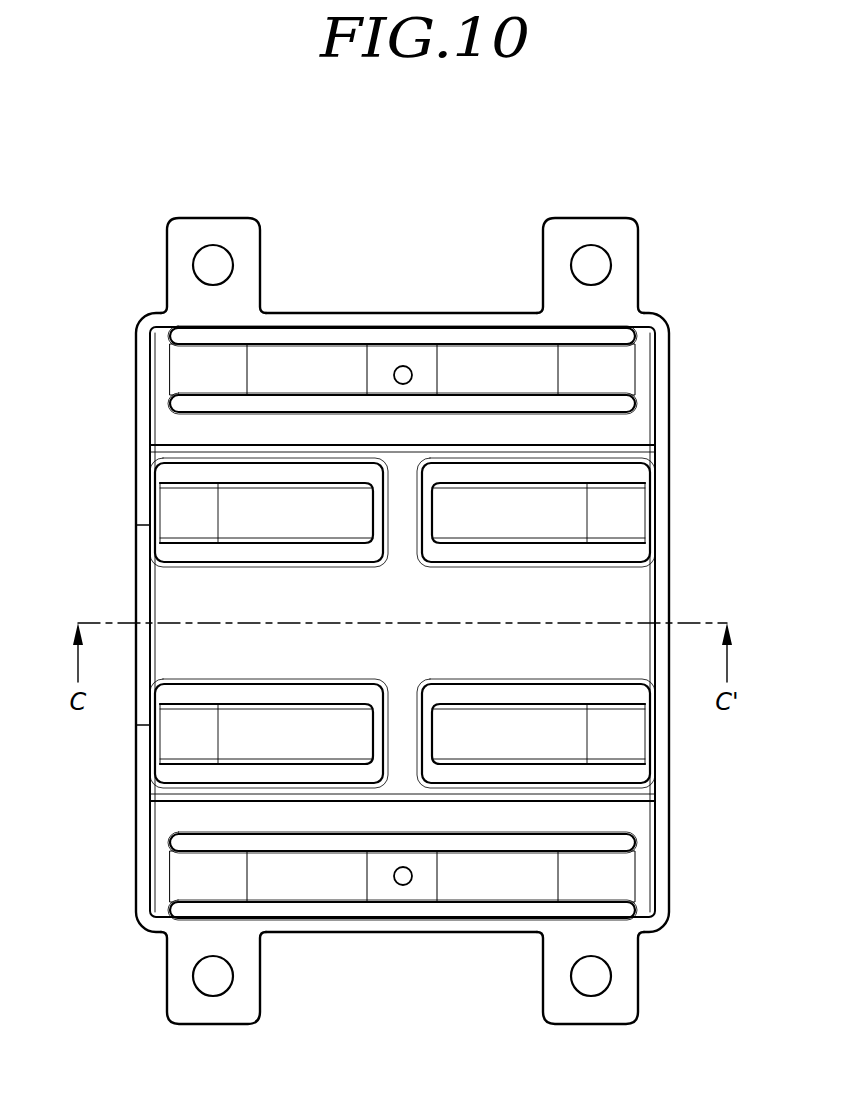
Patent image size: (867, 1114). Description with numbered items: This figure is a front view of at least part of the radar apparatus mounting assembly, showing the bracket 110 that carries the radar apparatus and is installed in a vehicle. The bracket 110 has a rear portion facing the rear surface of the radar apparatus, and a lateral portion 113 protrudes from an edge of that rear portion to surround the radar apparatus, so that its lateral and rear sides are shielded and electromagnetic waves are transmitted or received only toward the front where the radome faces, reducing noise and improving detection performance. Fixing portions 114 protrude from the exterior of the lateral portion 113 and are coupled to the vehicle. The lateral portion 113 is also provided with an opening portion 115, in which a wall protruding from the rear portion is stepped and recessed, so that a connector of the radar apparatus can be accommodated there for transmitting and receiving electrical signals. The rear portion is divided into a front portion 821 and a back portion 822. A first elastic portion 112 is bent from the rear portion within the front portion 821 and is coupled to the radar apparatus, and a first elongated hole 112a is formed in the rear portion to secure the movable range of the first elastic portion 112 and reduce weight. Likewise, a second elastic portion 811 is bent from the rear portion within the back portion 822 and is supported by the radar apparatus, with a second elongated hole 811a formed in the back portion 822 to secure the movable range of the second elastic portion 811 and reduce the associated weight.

The bracket 110 is at (118, 178).
The first elastic portion 112 is at (313, 370).
The first elongated hole 112a is at (500, 403).
The lateral portion 113 is at (403, 313).
The fixing portion 114 is at (211, 232).
The opening portion 115 is at (141, 583).
The second elastic portion 811 is at (617, 518).
The second elongated hole 811a is at (557, 475).
The front portion 821 is at (185, 428).
The back portion 822 is at (617, 592).